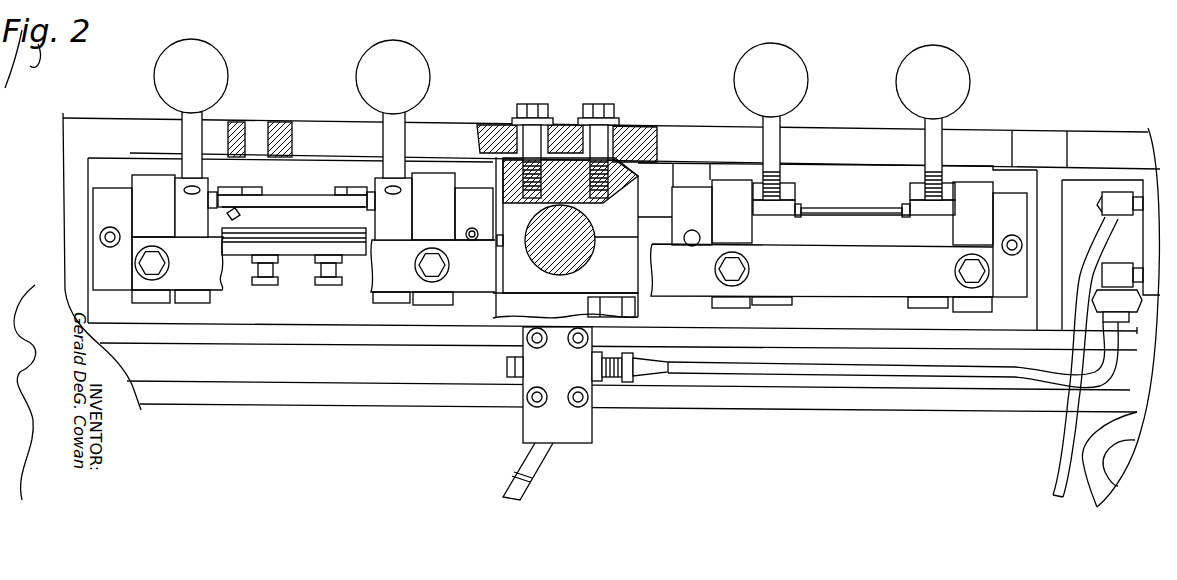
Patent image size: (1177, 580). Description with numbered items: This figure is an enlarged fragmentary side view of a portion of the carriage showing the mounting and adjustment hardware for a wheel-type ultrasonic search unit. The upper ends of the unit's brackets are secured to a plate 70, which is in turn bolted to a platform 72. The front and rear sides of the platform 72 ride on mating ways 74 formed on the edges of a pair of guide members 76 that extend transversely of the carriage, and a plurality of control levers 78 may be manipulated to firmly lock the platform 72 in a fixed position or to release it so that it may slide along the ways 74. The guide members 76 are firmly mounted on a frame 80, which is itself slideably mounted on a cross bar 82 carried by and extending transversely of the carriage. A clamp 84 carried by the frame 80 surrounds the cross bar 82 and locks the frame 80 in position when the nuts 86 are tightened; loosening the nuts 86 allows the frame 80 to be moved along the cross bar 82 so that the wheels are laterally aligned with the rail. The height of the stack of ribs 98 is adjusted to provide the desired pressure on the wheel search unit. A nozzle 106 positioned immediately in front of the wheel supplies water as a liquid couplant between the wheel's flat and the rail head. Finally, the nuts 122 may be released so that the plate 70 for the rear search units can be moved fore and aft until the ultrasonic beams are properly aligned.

The plate 70 is at (297, 262).
The platform 72 is at (268, 216).
The ways 74 is at (844, 218).
The guide members 76 is at (808, 226).
The control levers 78 is at (222, 55).
The frame 80 is at (200, 281).
The cross bar 82 is at (568, 238).
The clamp 84 is at (640, 245).
The nuts 86 is at (641, 309).
The ribs 98 is at (283, 238).
The nozzle 106 is at (548, 455).
The nuts 122 is at (362, 186).